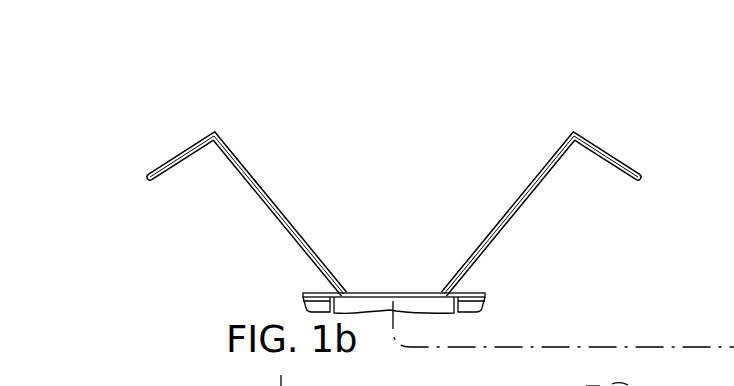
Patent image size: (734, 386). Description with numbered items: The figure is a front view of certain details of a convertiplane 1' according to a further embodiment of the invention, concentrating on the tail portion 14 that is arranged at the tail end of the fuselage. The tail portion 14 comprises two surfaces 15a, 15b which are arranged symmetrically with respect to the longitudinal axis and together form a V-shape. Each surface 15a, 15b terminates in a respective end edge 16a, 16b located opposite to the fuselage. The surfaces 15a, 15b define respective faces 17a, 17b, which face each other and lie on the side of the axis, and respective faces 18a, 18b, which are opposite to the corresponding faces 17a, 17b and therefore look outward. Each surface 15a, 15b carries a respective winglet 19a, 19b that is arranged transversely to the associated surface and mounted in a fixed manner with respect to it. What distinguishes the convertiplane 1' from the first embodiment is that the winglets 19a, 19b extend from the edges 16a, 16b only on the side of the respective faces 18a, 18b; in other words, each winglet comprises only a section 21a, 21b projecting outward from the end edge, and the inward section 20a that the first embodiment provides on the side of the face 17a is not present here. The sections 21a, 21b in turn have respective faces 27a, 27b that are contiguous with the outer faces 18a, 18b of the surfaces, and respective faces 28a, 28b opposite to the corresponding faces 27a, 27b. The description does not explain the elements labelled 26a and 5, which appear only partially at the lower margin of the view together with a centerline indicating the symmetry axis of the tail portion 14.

The convertiplane 1' is at (405, 168).
The tail portion 14 is at (378, 213).
The surface 15a is at (278, 183).
The surface 15b is at (508, 180).
The end edge 16a is at (215, 130).
The end edge 16b is at (568, 130).
The face 17a is at (287, 200).
The face 17b is at (487, 215).
The face 18a is at (245, 183).
The face 18b is at (528, 200).
The winglet 19a is at (165, 178).
The winglet 19b is at (610, 122).
The section 21a is at (157, 140).
The section 21b is at (610, 172).
The face 27a is at (192, 160).
The face 27b is at (582, 153).
The face 28a is at (186, 140).
The face 28b is at (632, 157).
The section 20a is at (620, 385).
The first support 26a is at (592, 384).
The housing 5 is at (236, 383).